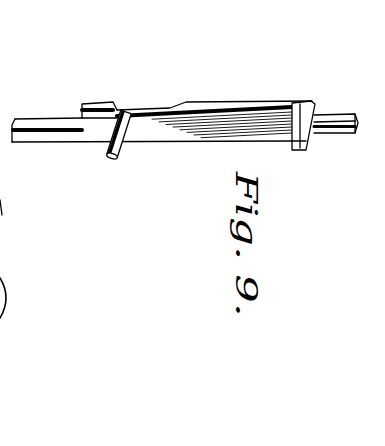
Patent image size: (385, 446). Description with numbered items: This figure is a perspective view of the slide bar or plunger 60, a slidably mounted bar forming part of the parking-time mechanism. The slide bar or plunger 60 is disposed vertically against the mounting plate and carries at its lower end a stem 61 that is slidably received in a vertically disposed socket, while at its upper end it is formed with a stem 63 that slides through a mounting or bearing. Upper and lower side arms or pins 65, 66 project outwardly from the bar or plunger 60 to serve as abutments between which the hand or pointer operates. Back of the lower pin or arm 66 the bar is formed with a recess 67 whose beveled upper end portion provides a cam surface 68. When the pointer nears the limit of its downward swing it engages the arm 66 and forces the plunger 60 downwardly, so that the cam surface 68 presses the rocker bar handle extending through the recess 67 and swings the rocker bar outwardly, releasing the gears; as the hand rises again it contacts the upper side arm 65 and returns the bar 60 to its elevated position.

The slide bar or plunger 60 is at (195, 133).
The stem 61 is at (32, 137).
The stem 63 is at (338, 133).
The upper side arm or pin 65 is at (305, 150).
The lower side arm or pin 66 is at (115, 163).
The recess 67 is at (127, 105).
The cam surface 68 is at (175, 109).